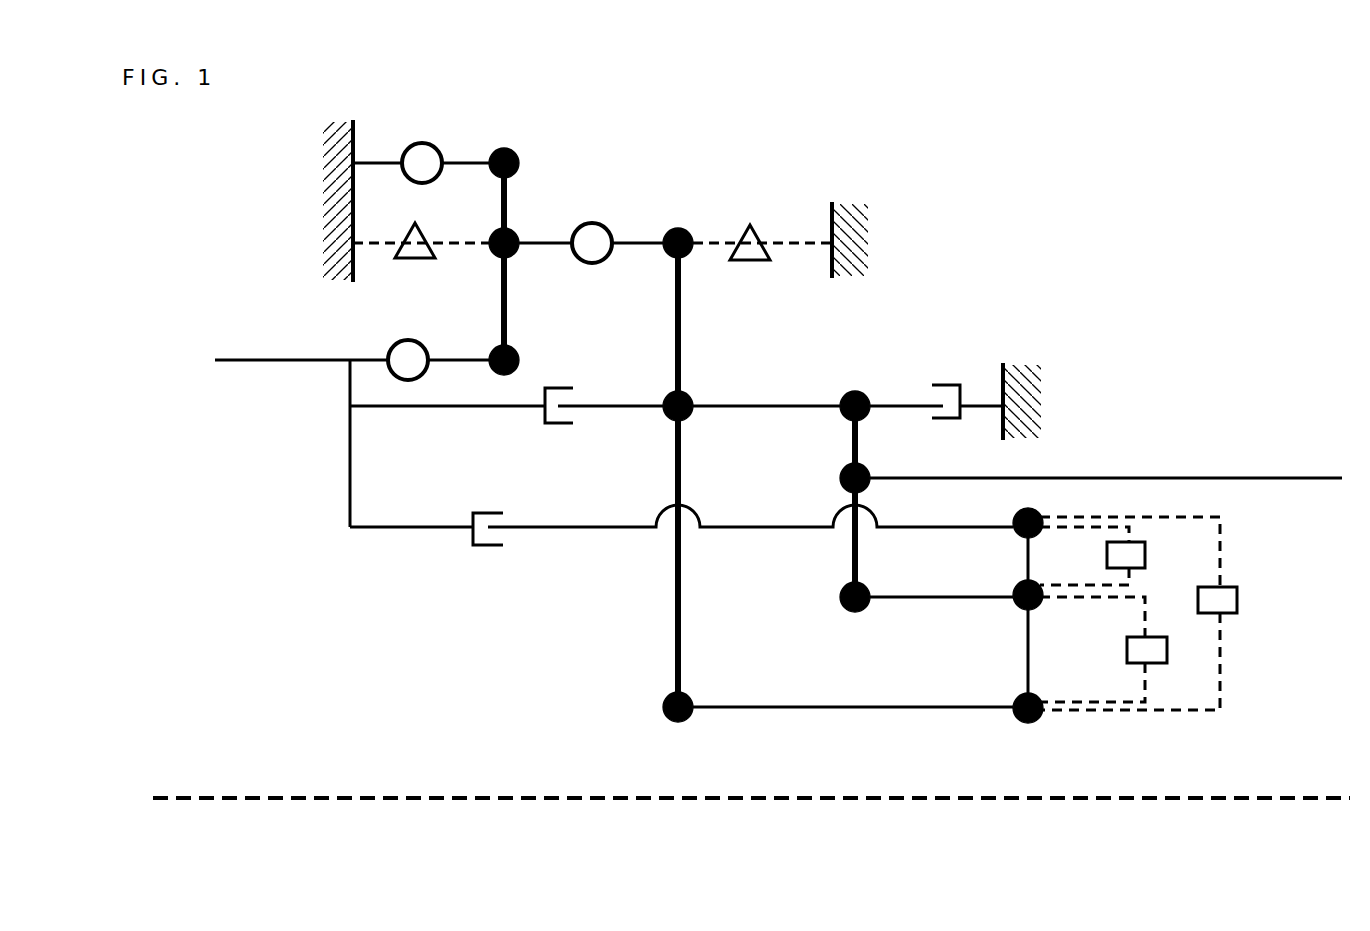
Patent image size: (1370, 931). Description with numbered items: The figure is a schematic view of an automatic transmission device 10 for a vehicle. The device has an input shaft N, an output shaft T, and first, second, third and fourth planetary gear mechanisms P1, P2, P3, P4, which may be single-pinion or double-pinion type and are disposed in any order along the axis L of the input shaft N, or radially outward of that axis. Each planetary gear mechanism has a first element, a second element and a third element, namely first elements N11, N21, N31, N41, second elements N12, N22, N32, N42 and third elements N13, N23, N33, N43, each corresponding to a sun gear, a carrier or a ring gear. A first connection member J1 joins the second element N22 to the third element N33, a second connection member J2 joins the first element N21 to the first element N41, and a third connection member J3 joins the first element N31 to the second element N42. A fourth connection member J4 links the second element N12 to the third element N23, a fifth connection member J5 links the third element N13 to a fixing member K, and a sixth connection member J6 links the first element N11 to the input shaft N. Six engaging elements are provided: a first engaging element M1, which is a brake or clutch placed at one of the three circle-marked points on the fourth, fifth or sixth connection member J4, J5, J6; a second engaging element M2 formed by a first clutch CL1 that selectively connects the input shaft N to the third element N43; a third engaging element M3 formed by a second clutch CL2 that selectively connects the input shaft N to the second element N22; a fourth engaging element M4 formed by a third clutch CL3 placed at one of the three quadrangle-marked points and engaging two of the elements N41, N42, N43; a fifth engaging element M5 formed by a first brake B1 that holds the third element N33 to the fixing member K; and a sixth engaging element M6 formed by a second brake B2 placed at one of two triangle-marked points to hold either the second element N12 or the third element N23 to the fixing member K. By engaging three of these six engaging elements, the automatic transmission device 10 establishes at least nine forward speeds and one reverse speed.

The automatic transmission device 10 is at (736, 119).
The fixing member K is at (338, 124).
The axis L is at (250, 801).
The input shaft N is at (256, 363).
The output shaft T is at (1274, 480).
The first planetary gear mechanism P1 is at (492, 270).
The second planetary gear mechanism P2 is at (669, 672).
The third planetary gear mechanism P3 is at (833, 604).
The fourth planetary gear mechanism P4 is at (1012, 718).
The first connection member J1 is at (727, 408).
The second connection member J2 is at (785, 710).
The third connection member J3 is at (912, 599).
The fourth connection member J4 is at (530, 250).
The fifth connection member J5 is at (378, 161).
The sixth connection member J6 is at (448, 358).
The first engaging element M1 is at (438, 145).
The second engaging element M2 is at (681, 548).
The first clutch CL1 is at (681, 548).
The third engaging element M3 is at (506, 425).
The second clutch CL2 is at (506, 425).
The fourth engaging element M4 is at (1203, 596).
The third clutch CL3 is at (1203, 596).
The fifth engaging element M5 is at (949, 369).
The first brake B1 is at (949, 369).
The sixth engaging element M6 is at (592, 220).
The second brake B2 is at (592, 220).
The first element of first planetary gear mechanism N11 is at (517, 356).
The second element of first planetary gear mechanism N12 is at (517, 240).
The third element of first planetary gear mechanism N13 is at (517, 160).
The first element of second planetary gear mechanism N21 is at (690, 700).
The second element of second planetary gear mechanism N22 is at (688, 398).
The third element of second planetary gear mechanism N23 is at (690, 238).
The first element of third planetary gear mechanism N31 is at (866, 590).
The second element of third planetary gear mechanism N32 is at (866, 470).
The third element of third planetary gear mechanism N33 is at (867, 396).
The first element of fourth planetary gear mechanism N41 is at (1014, 702).
The second element of fourth planetary gear mechanism N42 is at (1014, 588).
The third element of fourth planetary gear mechanism N43 is at (1014, 518).